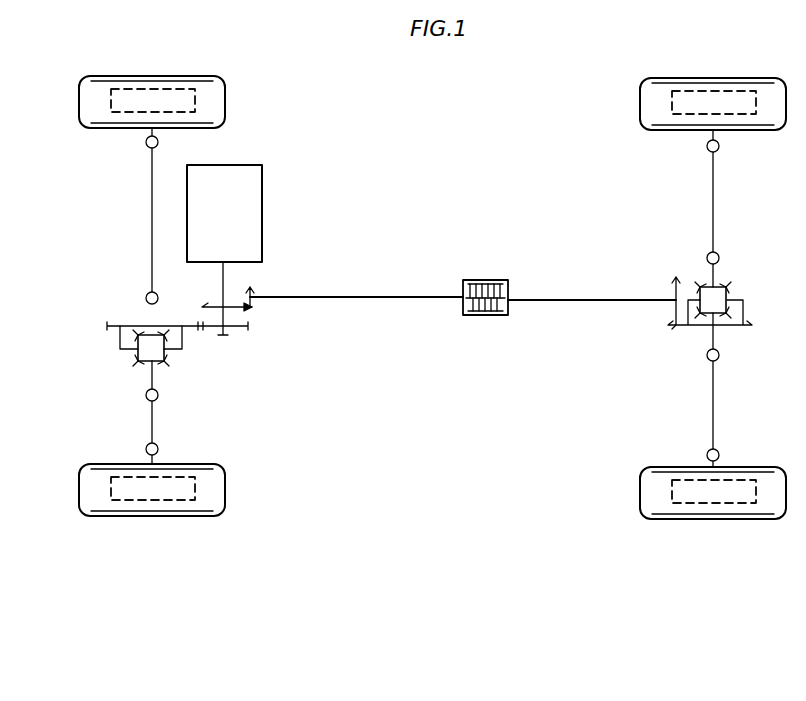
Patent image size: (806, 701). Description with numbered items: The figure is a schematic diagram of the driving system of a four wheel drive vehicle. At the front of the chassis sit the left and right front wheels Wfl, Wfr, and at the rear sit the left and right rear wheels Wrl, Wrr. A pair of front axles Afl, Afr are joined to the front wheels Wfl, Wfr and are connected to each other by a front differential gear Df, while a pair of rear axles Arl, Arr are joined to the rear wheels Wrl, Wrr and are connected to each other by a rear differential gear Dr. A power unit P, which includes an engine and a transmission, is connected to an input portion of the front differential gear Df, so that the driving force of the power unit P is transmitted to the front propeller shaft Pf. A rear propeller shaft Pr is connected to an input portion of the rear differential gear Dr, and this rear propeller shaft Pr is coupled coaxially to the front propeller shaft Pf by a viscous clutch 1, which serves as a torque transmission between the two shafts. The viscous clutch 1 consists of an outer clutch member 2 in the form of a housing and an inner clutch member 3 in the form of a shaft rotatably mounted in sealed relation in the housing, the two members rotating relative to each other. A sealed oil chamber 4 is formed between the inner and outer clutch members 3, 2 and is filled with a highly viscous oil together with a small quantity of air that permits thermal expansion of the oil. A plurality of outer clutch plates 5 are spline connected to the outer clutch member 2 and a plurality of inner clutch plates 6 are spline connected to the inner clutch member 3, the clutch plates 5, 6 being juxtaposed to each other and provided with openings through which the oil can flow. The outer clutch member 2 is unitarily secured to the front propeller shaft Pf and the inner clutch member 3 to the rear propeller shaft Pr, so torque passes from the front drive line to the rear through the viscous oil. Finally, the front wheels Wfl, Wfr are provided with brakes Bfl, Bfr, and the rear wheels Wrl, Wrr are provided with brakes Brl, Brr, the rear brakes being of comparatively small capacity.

The viscous clutch 1 is at (483, 287).
The outer clutch member 2 is at (498, 280).
The inner clutch member 3 is at (505, 316).
The sealed oil chamber 4 is at (466, 316).
The outer clutch plates 5 is at (470, 280).
The inner clutch plates 6 is at (489, 316).
The power unit P is at (228, 221).
The front propeller shaft Pf is at (349, 296).
The rear propeller shaft Pr is at (596, 299).
The front differential gear Df is at (172, 365).
The rear differential gear Dr is at (733, 290).
The right front axle Afr is at (150, 217).
The left front axle Afl is at (150, 421).
The right rear axle Arr is at (715, 195).
The left rear axle Arl is at (715, 390).
The right front wheel Wfr is at (104, 78).
The left front wheel Wfl is at (110, 516).
The right rear wheel Wrr is at (675, 80).
The left rear wheel Wrl is at (680, 519).
The right front brake Bfr is at (173, 92).
The left front brake Bfl is at (183, 505).
The right rear brake Brr is at (735, 95).
The left rear brake Brl is at (738, 505).